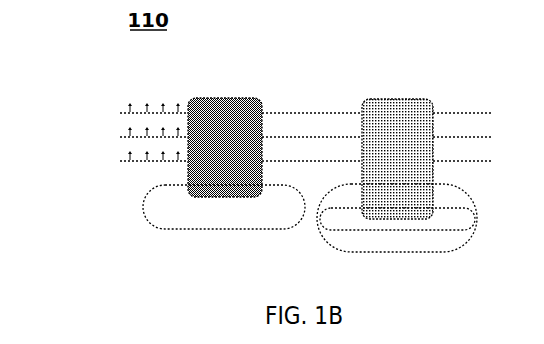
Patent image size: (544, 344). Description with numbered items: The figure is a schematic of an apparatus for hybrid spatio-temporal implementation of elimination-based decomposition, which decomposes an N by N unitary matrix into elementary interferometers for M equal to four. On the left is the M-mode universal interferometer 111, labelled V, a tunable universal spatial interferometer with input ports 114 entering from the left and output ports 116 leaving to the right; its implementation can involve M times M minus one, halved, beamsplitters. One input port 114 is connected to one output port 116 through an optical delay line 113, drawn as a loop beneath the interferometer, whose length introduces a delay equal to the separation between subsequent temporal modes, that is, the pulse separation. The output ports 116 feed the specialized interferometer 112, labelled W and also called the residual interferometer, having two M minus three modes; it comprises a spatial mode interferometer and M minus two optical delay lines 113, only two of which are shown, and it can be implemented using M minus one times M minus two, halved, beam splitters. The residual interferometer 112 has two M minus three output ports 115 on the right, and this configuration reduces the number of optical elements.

The universal interferometer 111 is at (226, 97).
The specialized interferometer 112 is at (399, 97).
The optical delay line 113 is at (315, 245).
The input ports 114 is at (120, 113).
The output ports 115 is at (493, 161).
The output ports 116 is at (265, 129).